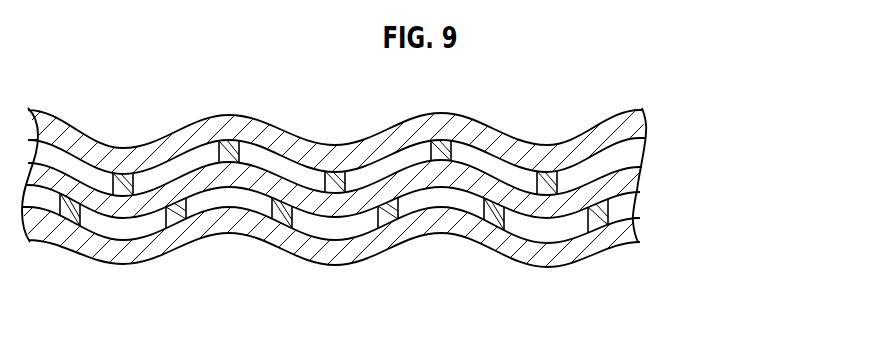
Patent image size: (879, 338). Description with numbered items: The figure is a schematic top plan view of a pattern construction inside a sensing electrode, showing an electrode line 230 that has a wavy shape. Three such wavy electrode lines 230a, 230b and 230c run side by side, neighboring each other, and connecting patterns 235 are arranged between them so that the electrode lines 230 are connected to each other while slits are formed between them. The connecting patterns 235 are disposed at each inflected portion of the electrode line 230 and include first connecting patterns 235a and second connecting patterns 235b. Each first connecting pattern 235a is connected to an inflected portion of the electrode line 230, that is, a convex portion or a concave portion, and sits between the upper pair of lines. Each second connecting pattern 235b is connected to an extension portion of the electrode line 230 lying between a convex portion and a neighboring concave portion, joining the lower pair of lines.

The electrode line 230 is at (412, 185).
The electrode line 230a is at (642, 124).
The electrode line 230b is at (632, 173).
The electrode line 230c is at (631, 222).
The connecting pattern 235 is at (334, 191).
The first connecting pattern 235a is at (218, 142).
The second connecting pattern 235b is at (155, 238).